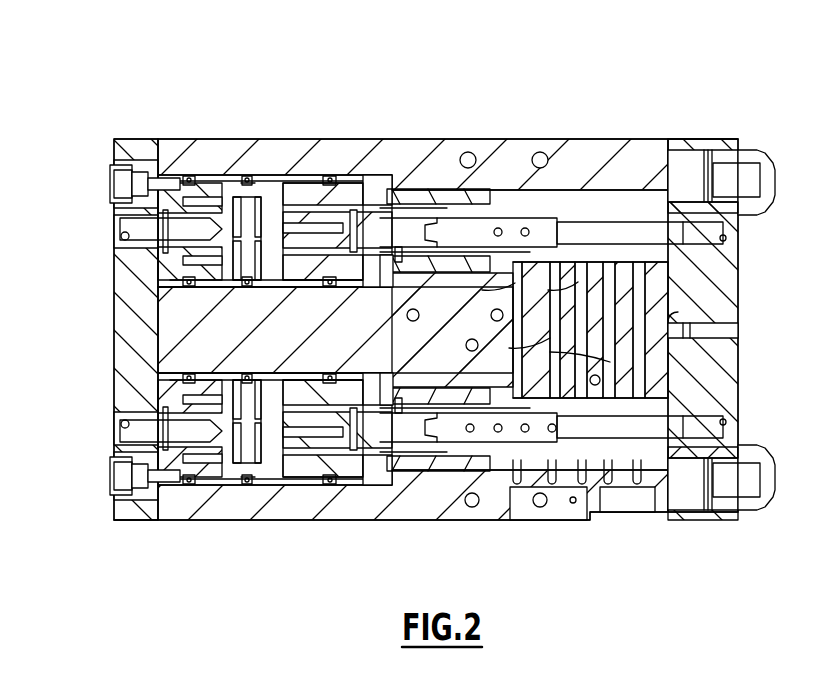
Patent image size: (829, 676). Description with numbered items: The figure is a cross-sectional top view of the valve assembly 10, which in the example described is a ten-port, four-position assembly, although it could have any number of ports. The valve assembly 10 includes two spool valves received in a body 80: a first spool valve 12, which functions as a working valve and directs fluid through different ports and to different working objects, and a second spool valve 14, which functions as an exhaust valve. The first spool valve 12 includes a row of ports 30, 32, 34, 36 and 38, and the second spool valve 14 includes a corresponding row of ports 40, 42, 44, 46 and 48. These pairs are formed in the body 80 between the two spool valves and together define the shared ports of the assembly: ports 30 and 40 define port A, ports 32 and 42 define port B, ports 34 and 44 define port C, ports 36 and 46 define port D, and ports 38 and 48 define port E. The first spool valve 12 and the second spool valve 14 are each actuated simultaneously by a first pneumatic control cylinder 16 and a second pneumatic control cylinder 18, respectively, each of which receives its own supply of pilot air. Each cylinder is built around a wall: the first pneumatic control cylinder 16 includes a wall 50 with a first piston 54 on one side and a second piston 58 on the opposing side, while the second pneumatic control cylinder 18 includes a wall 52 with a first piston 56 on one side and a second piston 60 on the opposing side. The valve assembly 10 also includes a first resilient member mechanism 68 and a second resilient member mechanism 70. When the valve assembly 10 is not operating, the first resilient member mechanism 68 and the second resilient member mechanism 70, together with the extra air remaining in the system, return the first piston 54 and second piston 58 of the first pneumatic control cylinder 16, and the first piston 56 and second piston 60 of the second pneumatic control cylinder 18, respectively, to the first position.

The valve assembly 10 is at (408, 311).
The first spool valve 12 is at (478, 143).
The second spool valve 14 is at (445, 520).
The first pneumatic control cylinder 16 is at (290, 202).
The second pneumatic control cylinder 18 is at (292, 457).
The port 30 is at (522, 263).
The port 32 is at (555, 262).
The port 34 is at (590, 262).
The port 36 is at (625, 262).
The port 38 is at (666, 225).
The port 40 is at (510, 520).
The port 42 is at (560, 520).
The port 44 is at (588, 470).
The port 46 is at (615, 400).
The port 48 is at (660, 497).
The wall 50 is at (245, 228).
The wall 52 is at (247, 433).
The first piston 54 is at (197, 183).
The first piston 56 is at (210, 457).
The second piston 58 is at (257, 230).
The second piston 60 is at (262, 433).
The first resilient member mechanism 68 is at (425, 193).
The second resilient member mechanism 70 is at (407, 467).
The body 80 is at (220, 340).